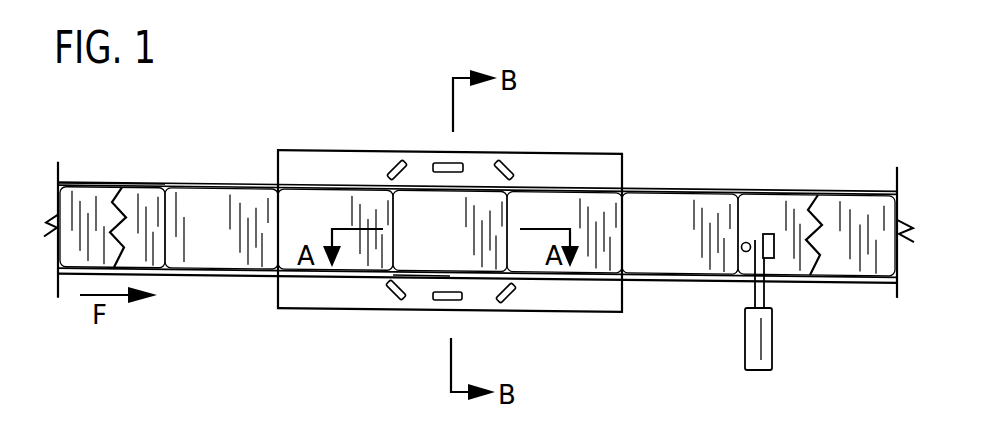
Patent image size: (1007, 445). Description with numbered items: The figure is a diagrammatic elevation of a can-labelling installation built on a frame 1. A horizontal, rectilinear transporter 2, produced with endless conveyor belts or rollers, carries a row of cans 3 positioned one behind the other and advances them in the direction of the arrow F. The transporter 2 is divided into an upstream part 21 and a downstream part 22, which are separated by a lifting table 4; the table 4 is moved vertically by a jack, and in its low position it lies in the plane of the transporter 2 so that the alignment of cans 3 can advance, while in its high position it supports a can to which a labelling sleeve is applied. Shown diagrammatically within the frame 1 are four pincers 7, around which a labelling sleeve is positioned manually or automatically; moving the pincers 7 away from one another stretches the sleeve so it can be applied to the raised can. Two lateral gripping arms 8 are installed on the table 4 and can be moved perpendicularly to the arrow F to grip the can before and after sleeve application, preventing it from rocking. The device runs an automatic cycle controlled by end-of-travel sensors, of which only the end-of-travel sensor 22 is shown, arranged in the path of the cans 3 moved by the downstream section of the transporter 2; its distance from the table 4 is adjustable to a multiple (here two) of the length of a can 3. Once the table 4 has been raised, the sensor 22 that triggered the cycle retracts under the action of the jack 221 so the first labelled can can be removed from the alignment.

The frame 1 is at (306, 142).
The transporter 2 is at (133, 175).
The upstream part of the transporter 21 is at (94, 183).
The cans 3 is at (276, 190).
The lifting table 4 is at (419, 292).
The pincers 7 is at (392, 161).
The lateral gripping arms 8 is at (446, 162).
The end-of-travel sensor 22 is at (750, 243).
The jack 221 is at (770, 338).